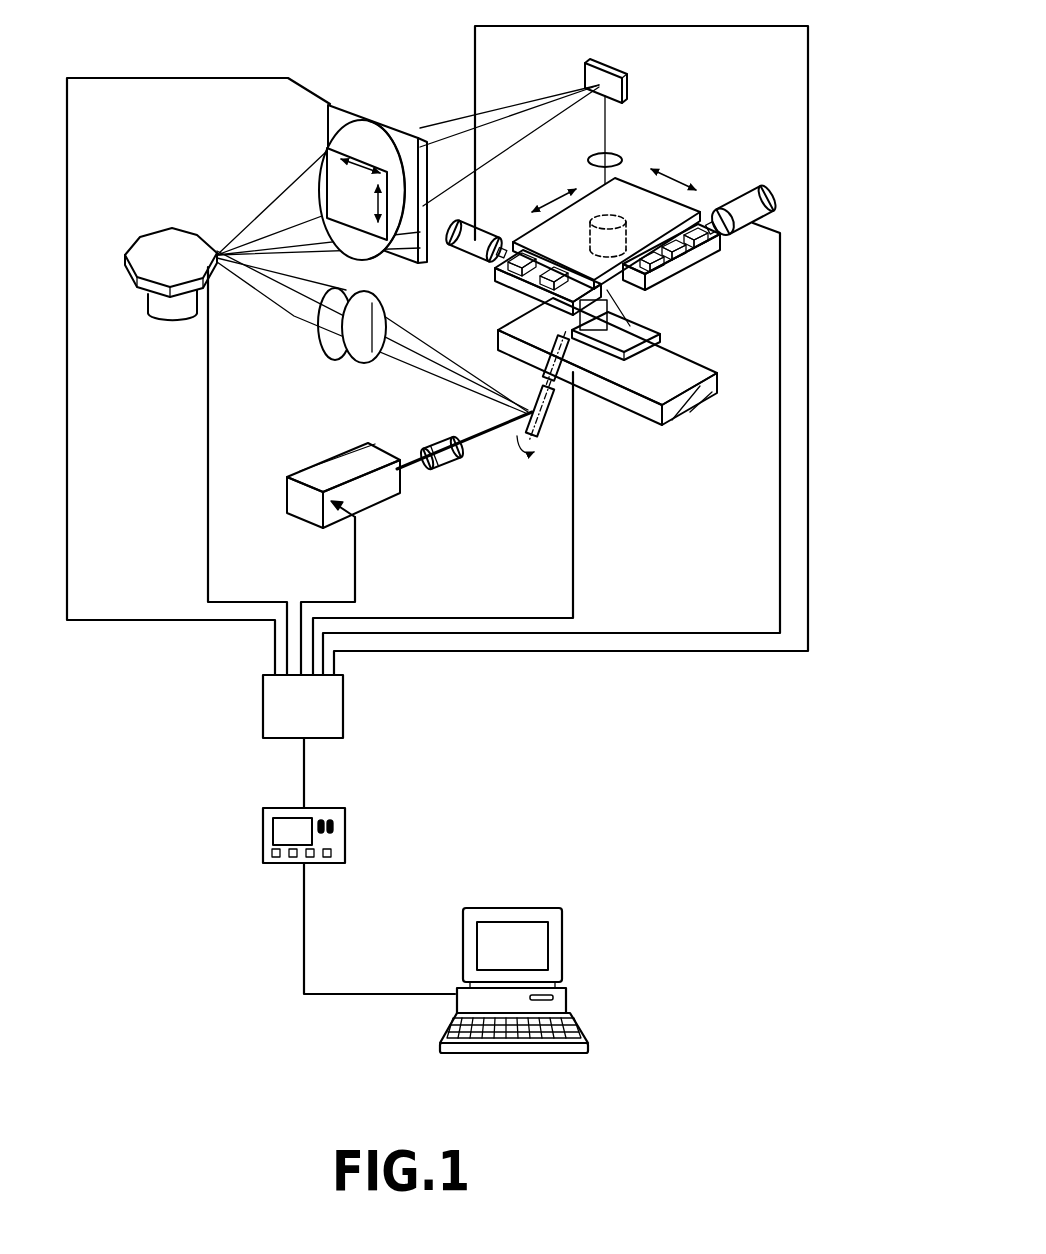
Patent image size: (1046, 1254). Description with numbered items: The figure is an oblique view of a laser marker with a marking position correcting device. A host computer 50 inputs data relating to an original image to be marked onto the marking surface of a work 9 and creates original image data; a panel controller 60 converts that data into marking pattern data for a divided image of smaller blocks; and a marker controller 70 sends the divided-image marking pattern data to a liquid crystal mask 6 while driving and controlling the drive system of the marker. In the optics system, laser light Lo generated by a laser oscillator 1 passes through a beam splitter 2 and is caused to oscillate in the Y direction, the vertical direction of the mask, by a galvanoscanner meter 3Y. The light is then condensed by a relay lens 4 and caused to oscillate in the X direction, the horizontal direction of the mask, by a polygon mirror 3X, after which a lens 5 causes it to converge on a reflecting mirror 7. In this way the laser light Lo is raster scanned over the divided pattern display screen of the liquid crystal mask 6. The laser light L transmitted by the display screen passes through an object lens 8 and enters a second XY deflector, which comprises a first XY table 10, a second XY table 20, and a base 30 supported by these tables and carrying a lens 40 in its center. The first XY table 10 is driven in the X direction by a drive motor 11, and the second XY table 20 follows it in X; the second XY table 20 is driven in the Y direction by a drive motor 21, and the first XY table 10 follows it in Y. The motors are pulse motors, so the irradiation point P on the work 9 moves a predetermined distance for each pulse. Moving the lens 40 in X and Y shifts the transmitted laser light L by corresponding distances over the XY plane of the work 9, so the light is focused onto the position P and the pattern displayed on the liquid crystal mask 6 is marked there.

The laser oscillator 1 is at (305, 472).
The beam splitter 2 is at (445, 441).
The polygon mirror 3X is at (186, 249).
The galvanoscanner meter 3Y is at (546, 440).
The relay lens 4 is at (360, 344).
The lens 5 is at (327, 152).
The liquid crystal mask 6 is at (337, 103).
The reflecting mirror 7 is at (613, 75).
The object lens 8 is at (624, 153).
The work 9 is at (656, 359).
The first XY table 10 is at (707, 273).
The drive motor 11 is at (755, 200).
The second XY table 20 is at (500, 283).
The drive motor 21 is at (457, 248).
The base 30 is at (700, 217).
The lens 40 is at (592, 207).
The host computer 50 is at (562, 946).
The panel controller 60 is at (345, 833).
The marker controller 70 is at (343, 715).
The laser light L is at (517, 102).
The laser light Lo is at (487, 442).
The irradiation point P is at (630, 322).